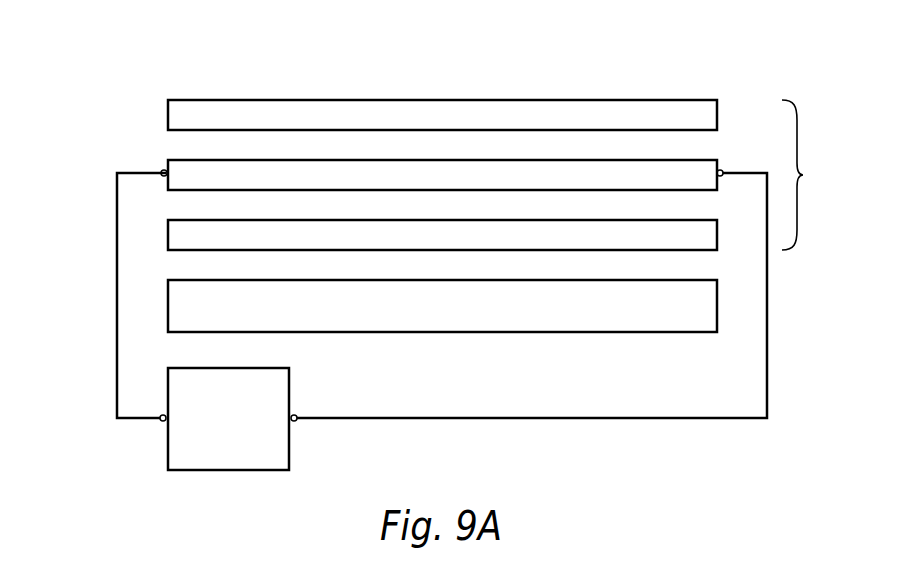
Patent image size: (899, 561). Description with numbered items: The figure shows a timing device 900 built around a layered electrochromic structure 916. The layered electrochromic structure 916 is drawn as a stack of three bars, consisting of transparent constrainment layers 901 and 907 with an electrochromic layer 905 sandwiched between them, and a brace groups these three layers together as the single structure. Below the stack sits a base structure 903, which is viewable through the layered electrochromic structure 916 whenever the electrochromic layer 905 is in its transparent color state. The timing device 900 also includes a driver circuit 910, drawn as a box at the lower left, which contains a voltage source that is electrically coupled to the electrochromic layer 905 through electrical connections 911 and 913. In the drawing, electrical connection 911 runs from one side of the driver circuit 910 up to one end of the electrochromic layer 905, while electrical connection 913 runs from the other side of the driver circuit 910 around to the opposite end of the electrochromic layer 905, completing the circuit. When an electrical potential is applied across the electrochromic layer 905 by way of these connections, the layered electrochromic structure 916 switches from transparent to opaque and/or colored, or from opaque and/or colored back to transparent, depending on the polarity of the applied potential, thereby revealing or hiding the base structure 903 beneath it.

The timing device 900 is at (137, 73).
The transparent constrainment layer 901 is at (168, 112).
The base structure 903 is at (717, 303).
The electrochromic layer 905 is at (168, 163).
The transparent constrainment layer 907 is at (168, 232).
The driver circuit 910 is at (289, 462).
The electrical connection 911 is at (117, 377).
The electrical connection 913 is at (643, 420).
The layered electrochromic structure 916 is at (814, 175).